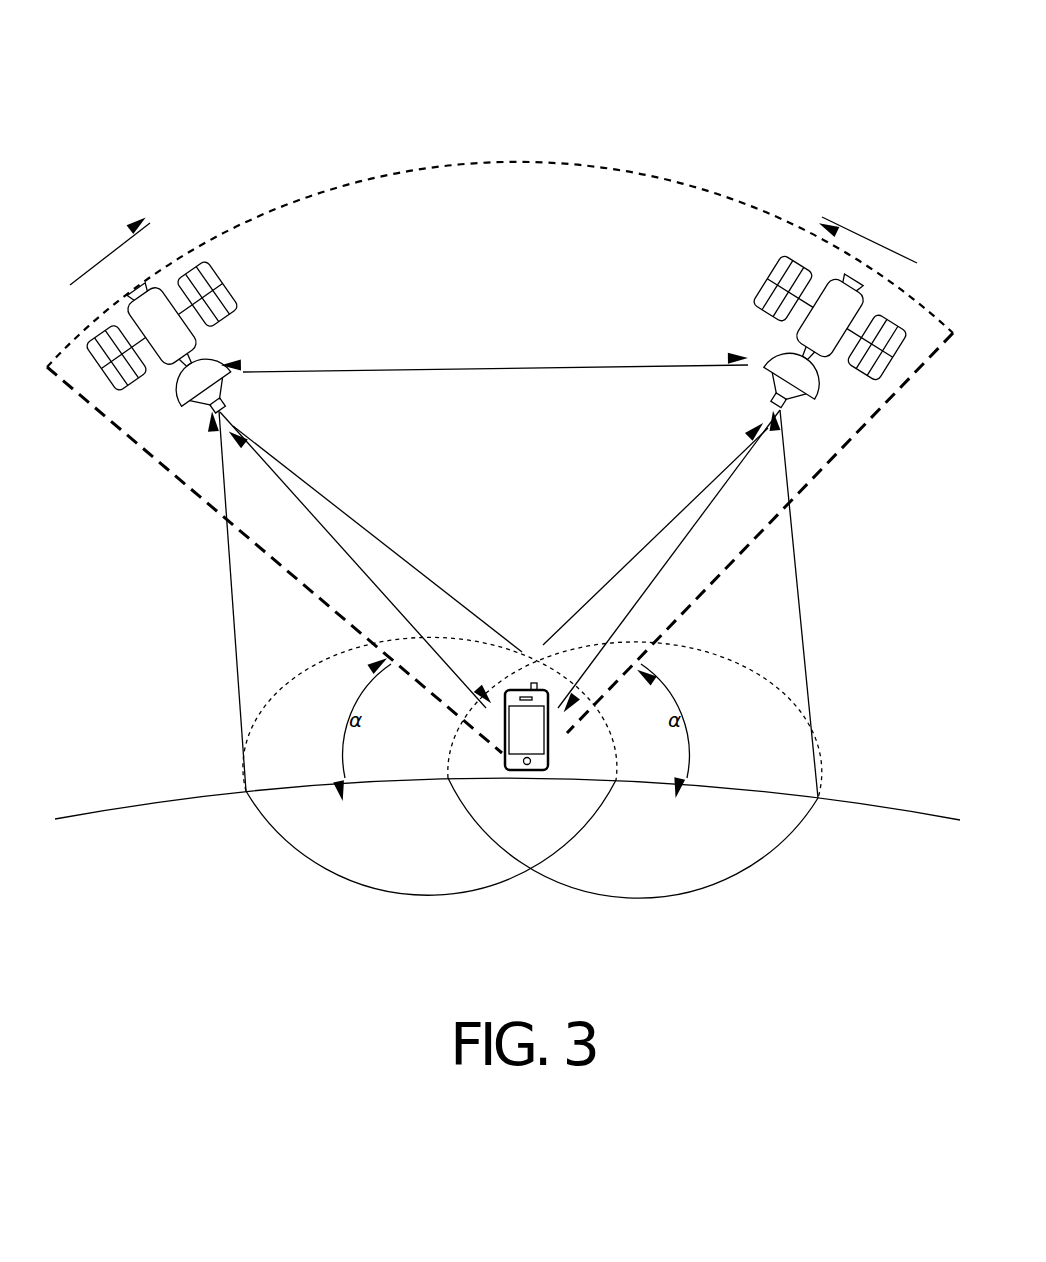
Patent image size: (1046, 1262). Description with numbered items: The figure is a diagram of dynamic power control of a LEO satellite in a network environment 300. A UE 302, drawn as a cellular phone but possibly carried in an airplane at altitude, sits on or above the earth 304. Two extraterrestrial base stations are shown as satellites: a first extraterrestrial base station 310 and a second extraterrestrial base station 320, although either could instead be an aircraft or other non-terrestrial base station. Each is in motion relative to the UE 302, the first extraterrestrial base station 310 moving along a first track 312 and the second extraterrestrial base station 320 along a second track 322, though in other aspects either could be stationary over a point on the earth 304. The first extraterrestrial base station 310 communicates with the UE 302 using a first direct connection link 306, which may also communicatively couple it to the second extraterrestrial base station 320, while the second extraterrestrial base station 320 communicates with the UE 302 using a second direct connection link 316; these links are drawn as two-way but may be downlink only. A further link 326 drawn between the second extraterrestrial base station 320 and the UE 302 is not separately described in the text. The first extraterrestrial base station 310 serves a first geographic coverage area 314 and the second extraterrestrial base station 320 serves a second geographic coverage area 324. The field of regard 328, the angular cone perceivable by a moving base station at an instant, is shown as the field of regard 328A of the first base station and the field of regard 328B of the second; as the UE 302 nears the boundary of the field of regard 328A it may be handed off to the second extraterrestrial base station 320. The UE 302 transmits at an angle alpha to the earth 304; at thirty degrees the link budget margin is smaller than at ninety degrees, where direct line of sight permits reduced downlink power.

The network environment 300 is at (754, 93).
The UE 302 is at (548, 728).
The earth 304 is at (858, 900).
The first direct connection link 306 is at (497, 368).
The first extraterrestrial base station 310 is at (240, 283).
The first track 312 is at (118, 247).
The first geographic coverage area 314 is at (229, 563).
The second direct connection link 316 is at (315, 517).
The second extraterrestrial base station 320 is at (748, 281).
The second track 322 is at (880, 244).
The second geographic coverage area 324 is at (797, 555).
The second satellite communication link 326 is at (716, 502).
The field of regard 328 is at (500, 160).
The field of regard of first extraterrestrial base station 328A is at (652, 904).
The field of regard of second extraterrestrial base station 328B is at (355, 892).